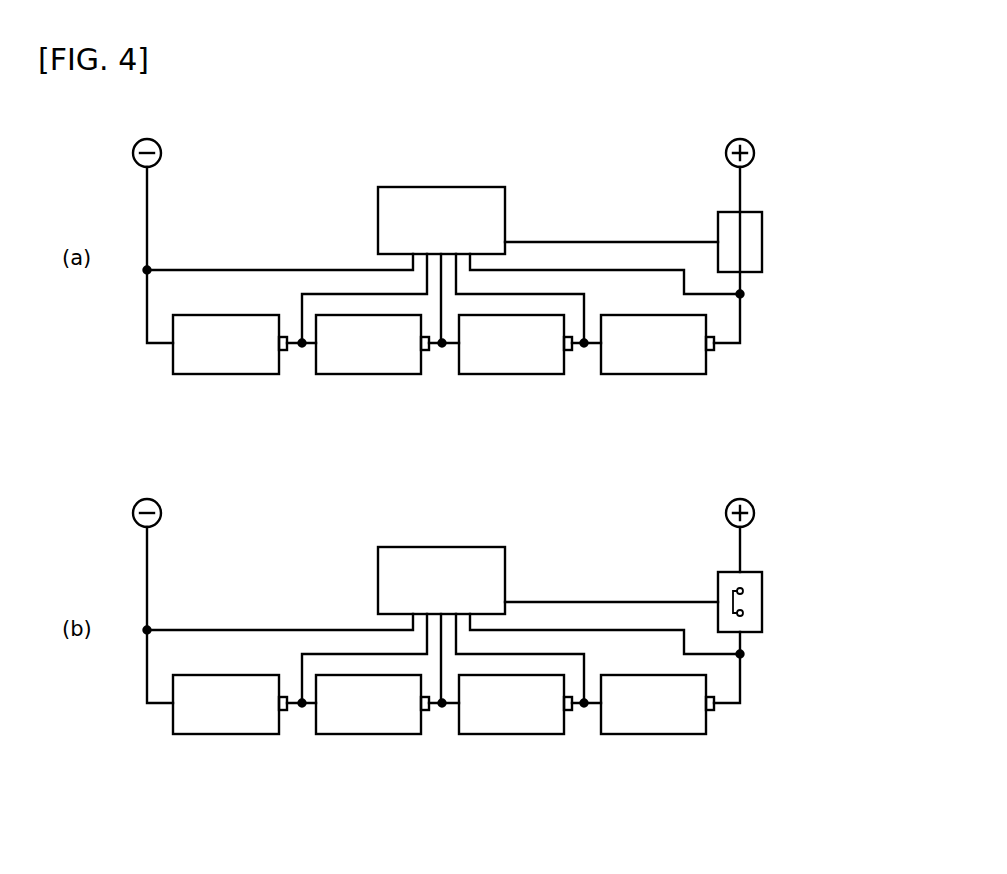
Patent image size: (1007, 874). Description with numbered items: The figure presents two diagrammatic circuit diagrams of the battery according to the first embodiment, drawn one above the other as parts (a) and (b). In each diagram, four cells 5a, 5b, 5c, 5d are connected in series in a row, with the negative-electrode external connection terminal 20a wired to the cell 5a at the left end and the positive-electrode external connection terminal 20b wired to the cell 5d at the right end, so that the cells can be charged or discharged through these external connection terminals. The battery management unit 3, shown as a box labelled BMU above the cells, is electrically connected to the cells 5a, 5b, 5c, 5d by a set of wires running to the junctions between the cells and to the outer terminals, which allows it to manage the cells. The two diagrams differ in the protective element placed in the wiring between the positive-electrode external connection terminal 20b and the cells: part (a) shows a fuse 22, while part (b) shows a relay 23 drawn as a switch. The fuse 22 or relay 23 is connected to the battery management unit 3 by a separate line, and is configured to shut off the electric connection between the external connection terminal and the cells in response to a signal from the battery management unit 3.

The battery management unit 3 is at (472, 192).
The cell 5a is at (230, 357).
The cell 5b is at (372, 357).
The cell 5c is at (515, 357).
The cell 5d is at (656, 357).
The negative-electrode external connection terminal 20a is at (155, 146).
The positive-electrode external connection terminal 20b is at (750, 146).
The fuse 22 is at (748, 250).
The relay 23 is at (751, 613).